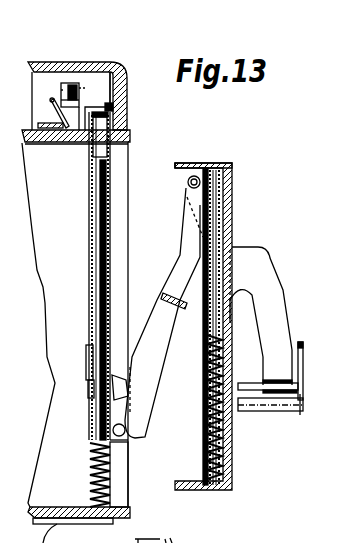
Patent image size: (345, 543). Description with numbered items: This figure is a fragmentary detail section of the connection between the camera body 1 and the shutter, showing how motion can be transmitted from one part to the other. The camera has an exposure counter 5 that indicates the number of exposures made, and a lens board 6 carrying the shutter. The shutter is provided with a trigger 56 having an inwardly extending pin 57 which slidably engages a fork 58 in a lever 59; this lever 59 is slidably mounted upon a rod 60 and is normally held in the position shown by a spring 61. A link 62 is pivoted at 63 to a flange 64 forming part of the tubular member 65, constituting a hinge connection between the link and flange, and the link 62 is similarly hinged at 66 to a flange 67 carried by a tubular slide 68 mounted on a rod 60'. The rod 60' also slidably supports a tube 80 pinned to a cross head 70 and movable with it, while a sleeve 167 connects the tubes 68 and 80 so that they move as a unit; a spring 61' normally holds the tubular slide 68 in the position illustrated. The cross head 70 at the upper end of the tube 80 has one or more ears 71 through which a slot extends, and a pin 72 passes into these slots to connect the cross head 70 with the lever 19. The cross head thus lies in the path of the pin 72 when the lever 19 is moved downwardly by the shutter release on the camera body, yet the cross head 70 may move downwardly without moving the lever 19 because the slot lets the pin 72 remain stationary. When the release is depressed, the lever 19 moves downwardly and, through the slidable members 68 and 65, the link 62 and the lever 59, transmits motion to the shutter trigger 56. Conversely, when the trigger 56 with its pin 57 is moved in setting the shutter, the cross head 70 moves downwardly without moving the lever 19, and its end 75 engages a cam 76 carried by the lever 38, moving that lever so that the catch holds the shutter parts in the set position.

The camera body 1 is at (28, 198).
The exposure counter 5 is at (6, 432).
The lens board 6 is at (233, 474).
The lever 19 is at (72, 83).
The lever 38 is at (50, 129).
The trigger 56 is at (302, 341).
The pin 57 is at (280, 408).
The fork 58 is at (263, 394).
The lever 59 is at (270, 300).
The rod 60 is at (226, 326).
The rod 60' is at (79, 192).
The spring 61 is at (195, 407).
The spring 61' is at (78, 475).
The link 62 is at (181, 249).
The pivot 63 is at (188, 186).
The flange 64 is at (205, 164).
The tubular member 65 is at (222, 192).
The hinge 66 is at (124, 436).
The flange 67 is at (93, 366).
The sleeve 167 is at (88, 338).
The tubular slide 68 is at (92, 400).
The cross head 70 is at (114, 107).
The ears 71 is at (63, 84).
The pin 72 is at (87, 90).
The end of cross head 75 is at (78, 131).
The cam 76 is at (52, 106).
The tube 80 is at (90, 212).